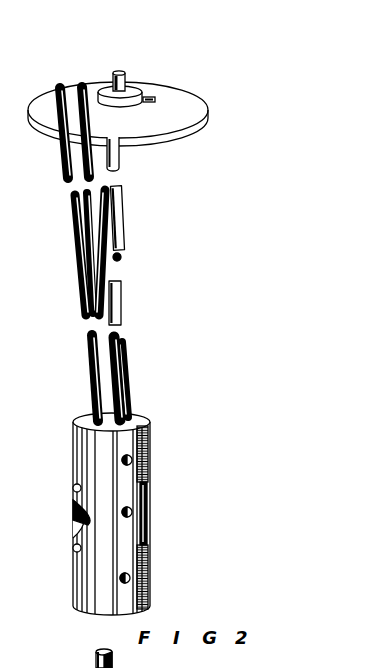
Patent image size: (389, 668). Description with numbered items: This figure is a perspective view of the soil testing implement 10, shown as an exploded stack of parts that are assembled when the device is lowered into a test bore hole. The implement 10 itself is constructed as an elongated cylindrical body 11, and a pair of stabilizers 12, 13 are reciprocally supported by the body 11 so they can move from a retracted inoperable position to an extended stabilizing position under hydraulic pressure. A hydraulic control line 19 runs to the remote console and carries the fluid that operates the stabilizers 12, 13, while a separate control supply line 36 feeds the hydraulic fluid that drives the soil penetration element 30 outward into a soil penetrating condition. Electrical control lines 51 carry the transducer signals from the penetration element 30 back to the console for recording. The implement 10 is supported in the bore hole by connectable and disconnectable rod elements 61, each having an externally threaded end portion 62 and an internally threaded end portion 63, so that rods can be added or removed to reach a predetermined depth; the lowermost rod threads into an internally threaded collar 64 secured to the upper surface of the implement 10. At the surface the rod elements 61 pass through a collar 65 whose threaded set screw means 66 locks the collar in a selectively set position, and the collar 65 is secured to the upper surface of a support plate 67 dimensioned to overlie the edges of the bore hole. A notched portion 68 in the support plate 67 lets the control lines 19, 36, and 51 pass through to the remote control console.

The soil testing implement 10 is at (73, 586).
The elongated cylindrical body 11 is at (146, 543).
The stabilizer 12 is at (148, 462).
The stabilizer 13 is at (148, 576).
The hydraulic control line 19 is at (78, 267).
The soil penetration element 30 is at (73, 530).
The control supply line 36 is at (131, 398).
The electrical control lines 51 is at (87, 407).
The rod elements 61 is at (122, 222).
The externally threaded end portion 62 is at (122, 258).
The internally threaded end portion 63 is at (122, 278).
The internally threaded collar 64 is at (130, 666).
The collar 65 is at (134, 90).
The threaded set screw means 66 is at (156, 100).
The support plate 67 is at (195, 110).
The notched portion 68 is at (57, 123).